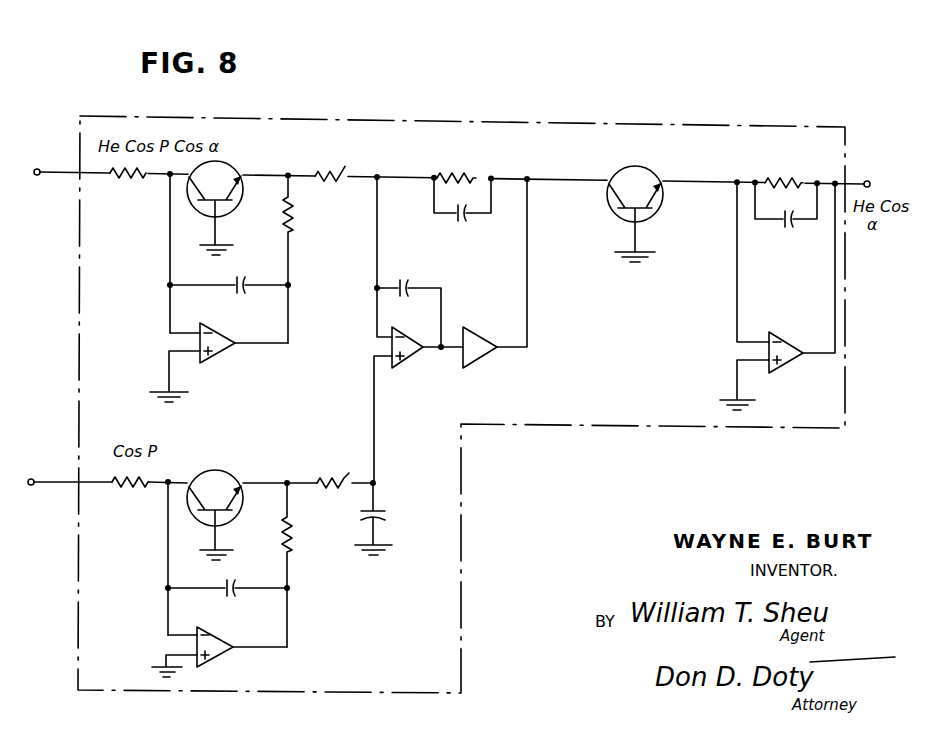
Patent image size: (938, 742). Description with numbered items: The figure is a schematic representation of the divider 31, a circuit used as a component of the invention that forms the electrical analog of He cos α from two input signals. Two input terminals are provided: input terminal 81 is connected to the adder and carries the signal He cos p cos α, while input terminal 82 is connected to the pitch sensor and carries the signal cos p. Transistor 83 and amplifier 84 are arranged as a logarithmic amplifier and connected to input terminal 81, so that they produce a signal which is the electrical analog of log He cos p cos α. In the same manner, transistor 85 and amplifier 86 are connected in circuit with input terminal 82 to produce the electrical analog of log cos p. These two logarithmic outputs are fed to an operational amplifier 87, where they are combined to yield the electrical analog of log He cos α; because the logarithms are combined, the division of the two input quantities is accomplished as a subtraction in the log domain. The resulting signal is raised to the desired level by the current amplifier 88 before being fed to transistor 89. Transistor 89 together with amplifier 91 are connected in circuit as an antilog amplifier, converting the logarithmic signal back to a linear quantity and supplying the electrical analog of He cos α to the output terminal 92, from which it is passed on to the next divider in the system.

The divider 31 is at (419, 108).
The input terminal 81 is at (41, 165).
The input terminal 82 is at (39, 471).
The transistor 83 is at (245, 189).
The amplifier 84 is at (235, 335).
The transistor 85 is at (250, 461).
The amplifier 86 is at (241, 635).
The operational amplifier 87 is at (427, 336).
The current amplifier 88 is at (504, 336).
The transistor 89 is at (606, 202).
The amplifier 91 is at (798, 338).
The output terminal 92 is at (869, 180).